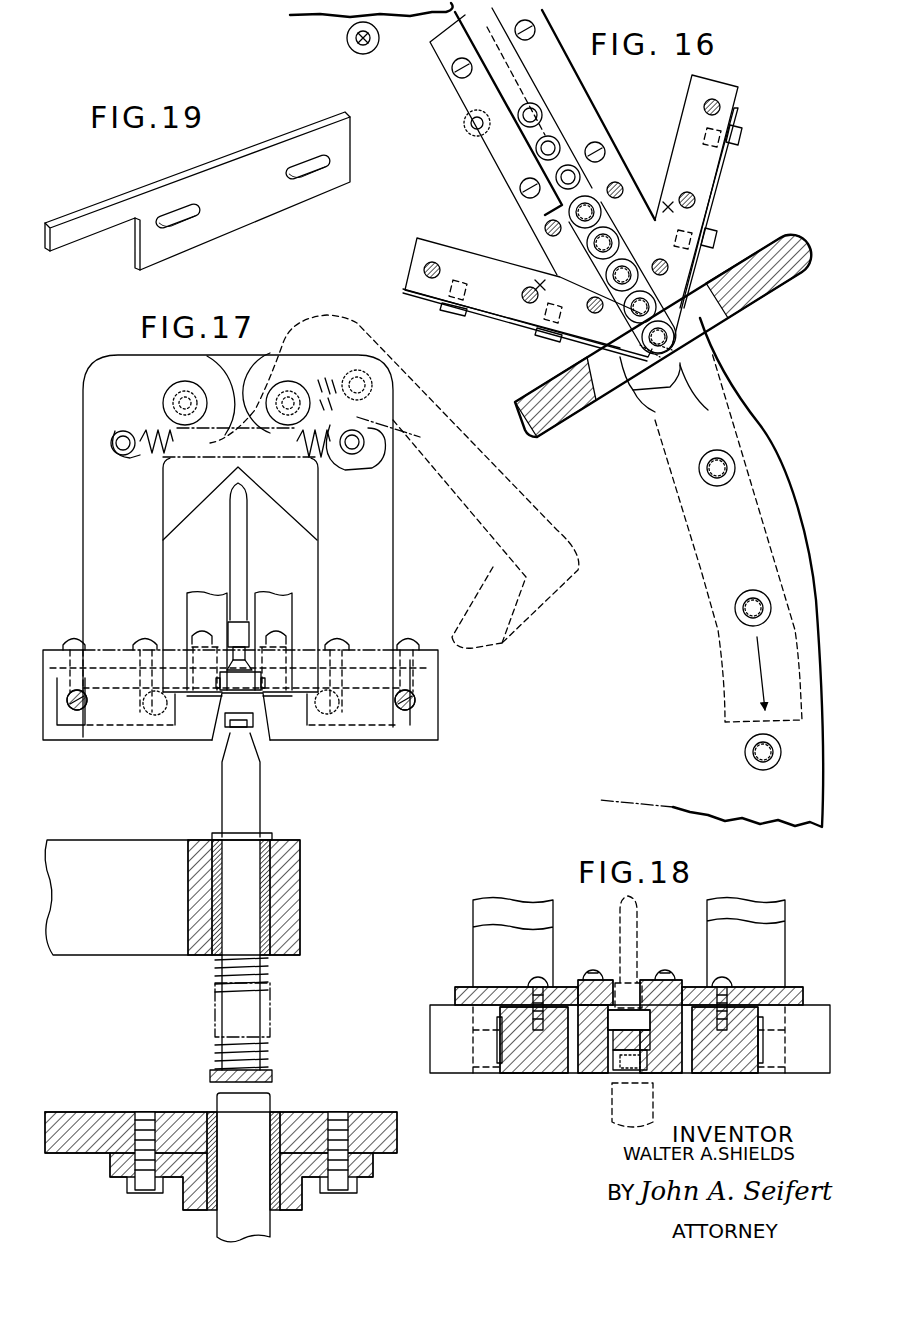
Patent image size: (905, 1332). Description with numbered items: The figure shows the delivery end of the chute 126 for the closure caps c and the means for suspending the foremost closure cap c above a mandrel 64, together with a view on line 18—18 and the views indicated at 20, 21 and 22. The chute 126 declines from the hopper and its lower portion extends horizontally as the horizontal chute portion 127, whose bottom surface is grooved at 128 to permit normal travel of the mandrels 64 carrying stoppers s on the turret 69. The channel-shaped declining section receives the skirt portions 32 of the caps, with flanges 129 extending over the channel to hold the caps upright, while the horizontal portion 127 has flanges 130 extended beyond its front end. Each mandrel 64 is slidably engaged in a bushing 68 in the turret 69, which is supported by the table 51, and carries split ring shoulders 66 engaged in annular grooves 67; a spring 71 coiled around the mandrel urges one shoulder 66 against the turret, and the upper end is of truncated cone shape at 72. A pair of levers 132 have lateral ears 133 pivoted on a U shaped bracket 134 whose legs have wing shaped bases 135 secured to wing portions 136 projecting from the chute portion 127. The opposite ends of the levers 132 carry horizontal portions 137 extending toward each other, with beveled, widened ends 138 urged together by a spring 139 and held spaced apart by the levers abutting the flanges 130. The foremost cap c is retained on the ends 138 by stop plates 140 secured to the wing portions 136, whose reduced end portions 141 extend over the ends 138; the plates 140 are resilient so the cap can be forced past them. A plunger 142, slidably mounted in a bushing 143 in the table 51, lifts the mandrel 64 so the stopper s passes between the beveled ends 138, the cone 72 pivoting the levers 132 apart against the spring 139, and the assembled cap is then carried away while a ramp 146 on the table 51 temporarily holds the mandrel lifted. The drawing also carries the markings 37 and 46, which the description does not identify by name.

In FIG. 16, the section line 18— 18 is at (727, 177).
In FIG. 16, the section line 20— 20 is at (533, 55).
In FIG. 17, the section line 21— 21 is at (44, 520).
In FIG. 16, the section line 22— 22 is at (720, 298).
In FIG. 16, the skirt portion 32 is at (576, 168).
In FIG. 17, the pin 37 is at (249, 553).
In FIG. 18, the pin 37 is at (641, 935).
In FIG. 16, the bearing 46 is at (347, 38).
In FIG. 17, the table 51 is at (365, 1106).
In FIG. 17, the mandrel 64 is at (261, 804).
In FIG. 18, the mandrel 64 is at (613, 1100).
In FIG. 17, the split ring shoulder 66 is at (262, 837).
In FIG. 17, the annular groove 67 is at (223, 836).
In FIG. 17, the bushing 68 is at (275, 897).
In FIG. 16, the turret 69 is at (452, 18).
In FIG. 17, the turret 69 is at (300, 940).
In FIG. 17, the spring 71 is at (272, 975).
In FIG. 17, the truncated cone end 72 is at (258, 745).
In FIG. 16, the chute 126 is at (442, 52).
In FIG. 18, the horizontal chute portion 127 is at (606, 1045).
In FIG. 18, the groove 128 is at (651, 1045).
In FIG. 16, the flange 129 is at (502, 160).
In FIG. 17, the flange 130 is at (181, 645).
In FIG. 18, the flange 130 is at (561, 985).
In FIG. 16, the lever 132 is at (781, 245).
In FIG. 17, the lever 132 is at (95, 510).
In FIG. 18, the lever 132 is at (503, 912).
In FIG. 17, the lateral ear 133 is at (268, 380).
In FIG. 17, the U shaped bracket 134 is at (187, 502).
In FIG. 18, the U shaped bracket 134 is at (523, 965).
In FIG. 17, the wing shaped base 135 is at (433, 660).
In FIG. 18, the wing shaped base 135 is at (455, 990).
In FIG. 16, the wing portion 136 is at (453, 257).
In FIG. 17, the wing portion 136 is at (58, 740).
In FIG. 18, the wing portion 136 is at (456, 1065).
In FIG. 16, the horizontal lever portion 137 is at (588, 412).
In FIG. 17, the horizontal lever portion 137 is at (198, 738).
In FIG. 18, the horizontal lever portion 137 is at (522, 1075).
In FIG. 16, the beveled lever end 138 is at (672, 372).
In FIG. 17, the beveled lever end 138 is at (220, 733).
In FIG. 18, the beveled lever end 138 is at (614, 1072).
In FIG. 17, the spring 139 is at (340, 462).
In FIG. 19, the stop plate 140 is at (237, 222).
In FIG. 16, the stop plate 140 is at (502, 320).
In FIG. 17, the stop plate 140 is at (74, 716).
In FIG. 18, the stop plate 140 is at (498, 1050).
In FIG. 19, the reduced end portion 141 is at (97, 224).
In FIG. 16, the reduced end portion 141 is at (678, 398).
In FIG. 17, the reduced end portion 141 is at (183, 682).
In FIG. 16, the plunger 142 is at (744, 243).
In FIG. 17, the plunger 142 is at (262, 1222).
In FIG. 17, the bushing 143 is at (278, 1113).
In FIG. 16, the ramp 146 is at (683, 496).
In FIG. 16, the closure cap C is at (500, 110).
In FIG. 17, the closure cap C is at (246, 691).
In FIG. 16, the stopper S is at (350, 56).
In FIG. 17, the stopper S is at (254, 718).